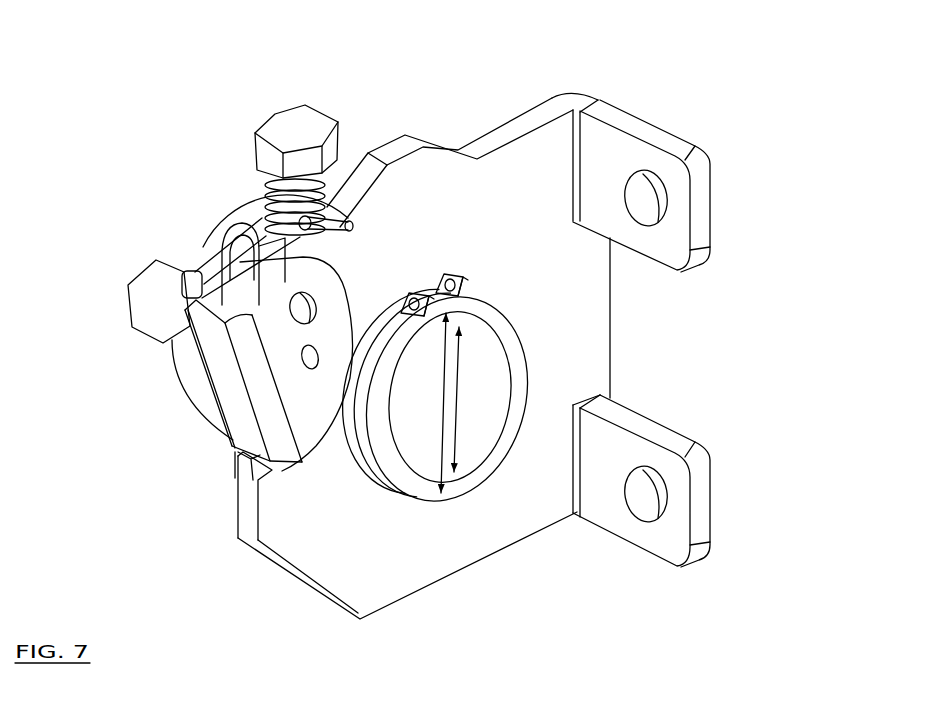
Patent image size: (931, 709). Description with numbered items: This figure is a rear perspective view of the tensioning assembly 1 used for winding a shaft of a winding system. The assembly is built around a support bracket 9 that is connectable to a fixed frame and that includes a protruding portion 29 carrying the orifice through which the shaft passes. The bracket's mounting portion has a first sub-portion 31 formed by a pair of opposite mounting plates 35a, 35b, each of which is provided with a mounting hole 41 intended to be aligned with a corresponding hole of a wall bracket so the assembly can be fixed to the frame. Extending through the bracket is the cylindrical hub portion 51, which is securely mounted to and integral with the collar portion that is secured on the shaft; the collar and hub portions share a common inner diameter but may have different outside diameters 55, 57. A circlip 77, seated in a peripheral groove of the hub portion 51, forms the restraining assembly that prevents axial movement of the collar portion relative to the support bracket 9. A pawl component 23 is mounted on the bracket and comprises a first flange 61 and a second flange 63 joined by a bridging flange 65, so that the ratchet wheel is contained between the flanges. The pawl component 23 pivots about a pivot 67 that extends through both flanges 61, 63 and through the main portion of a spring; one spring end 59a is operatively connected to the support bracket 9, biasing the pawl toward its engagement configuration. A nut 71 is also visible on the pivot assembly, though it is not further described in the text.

The tensioning assembly 1 is at (497, 65).
The support bracket 9 is at (441, 180).
The pawl component 23 is at (218, 452).
The protruding portion 29 is at (351, 580).
The first sub-portion 31 is at (683, 118).
The mounting plate 35a is at (701, 221).
The mounting plate 35b is at (701, 517).
The mounting hole 41 is at (650, 213).
The hub portion 51 is at (516, 316).
The outside diameter 55 is at (460, 391).
The outside diameter 57 is at (443, 409).
The spring end 59a is at (328, 240).
The first flange 61 is at (194, 274).
The second flange 63 is at (313, 419).
The bridging flange 65 is at (243, 421).
The pivot 67 is at (205, 246).
The hex nut 71 is at (288, 127).
The circlip 77 is at (381, 333).